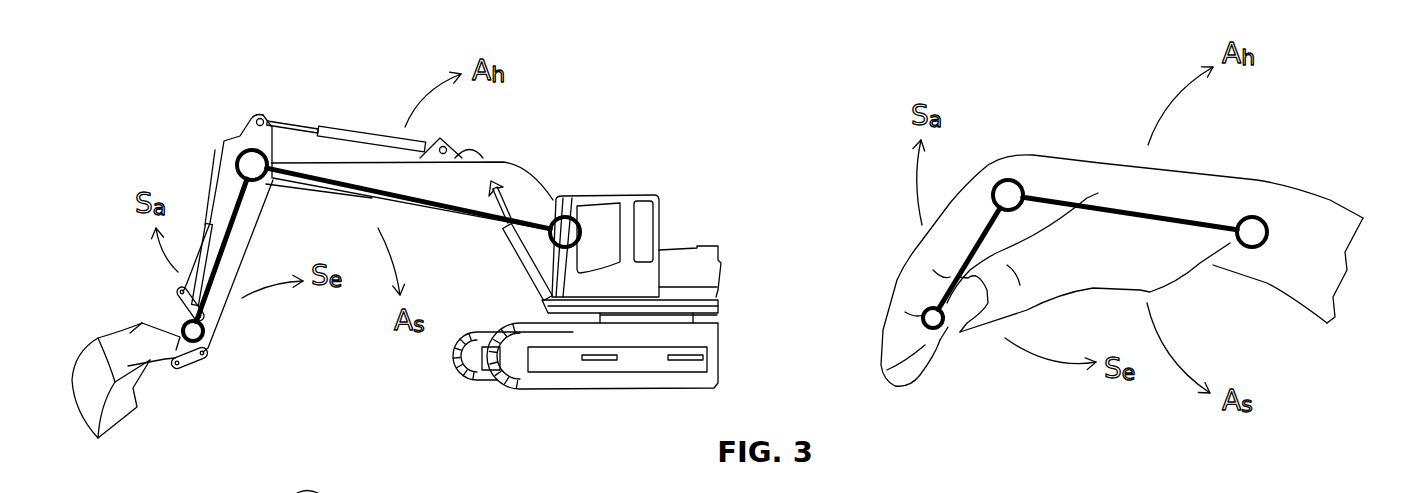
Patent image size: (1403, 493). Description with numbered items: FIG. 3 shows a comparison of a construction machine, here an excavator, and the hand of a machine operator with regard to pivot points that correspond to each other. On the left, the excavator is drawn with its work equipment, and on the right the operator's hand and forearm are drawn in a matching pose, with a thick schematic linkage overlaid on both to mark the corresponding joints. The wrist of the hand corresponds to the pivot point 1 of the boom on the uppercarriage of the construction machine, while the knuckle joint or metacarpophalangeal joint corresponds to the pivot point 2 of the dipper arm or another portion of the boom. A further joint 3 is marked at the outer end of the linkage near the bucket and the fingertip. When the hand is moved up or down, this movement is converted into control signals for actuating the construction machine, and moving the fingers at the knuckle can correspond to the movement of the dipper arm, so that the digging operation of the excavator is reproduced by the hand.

The pivot point of the boom 1 is at (914, 194).
The pivot point of the dipper arm 2 is at (716, 212).
The stick-bucket pivot / wrist joint 3 is at (579, 339).